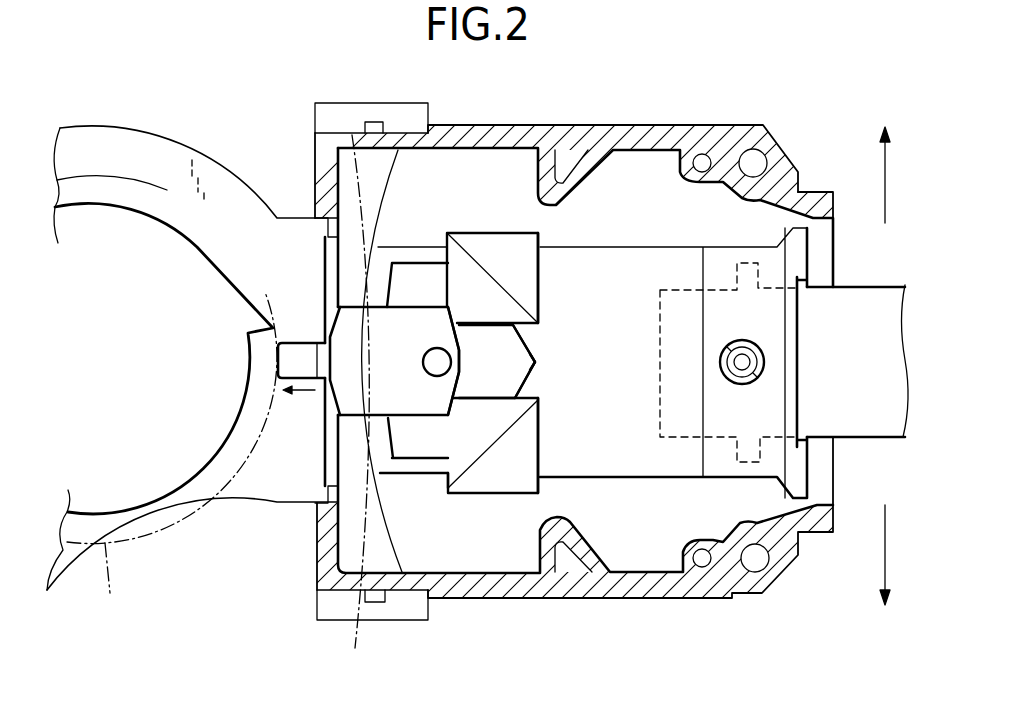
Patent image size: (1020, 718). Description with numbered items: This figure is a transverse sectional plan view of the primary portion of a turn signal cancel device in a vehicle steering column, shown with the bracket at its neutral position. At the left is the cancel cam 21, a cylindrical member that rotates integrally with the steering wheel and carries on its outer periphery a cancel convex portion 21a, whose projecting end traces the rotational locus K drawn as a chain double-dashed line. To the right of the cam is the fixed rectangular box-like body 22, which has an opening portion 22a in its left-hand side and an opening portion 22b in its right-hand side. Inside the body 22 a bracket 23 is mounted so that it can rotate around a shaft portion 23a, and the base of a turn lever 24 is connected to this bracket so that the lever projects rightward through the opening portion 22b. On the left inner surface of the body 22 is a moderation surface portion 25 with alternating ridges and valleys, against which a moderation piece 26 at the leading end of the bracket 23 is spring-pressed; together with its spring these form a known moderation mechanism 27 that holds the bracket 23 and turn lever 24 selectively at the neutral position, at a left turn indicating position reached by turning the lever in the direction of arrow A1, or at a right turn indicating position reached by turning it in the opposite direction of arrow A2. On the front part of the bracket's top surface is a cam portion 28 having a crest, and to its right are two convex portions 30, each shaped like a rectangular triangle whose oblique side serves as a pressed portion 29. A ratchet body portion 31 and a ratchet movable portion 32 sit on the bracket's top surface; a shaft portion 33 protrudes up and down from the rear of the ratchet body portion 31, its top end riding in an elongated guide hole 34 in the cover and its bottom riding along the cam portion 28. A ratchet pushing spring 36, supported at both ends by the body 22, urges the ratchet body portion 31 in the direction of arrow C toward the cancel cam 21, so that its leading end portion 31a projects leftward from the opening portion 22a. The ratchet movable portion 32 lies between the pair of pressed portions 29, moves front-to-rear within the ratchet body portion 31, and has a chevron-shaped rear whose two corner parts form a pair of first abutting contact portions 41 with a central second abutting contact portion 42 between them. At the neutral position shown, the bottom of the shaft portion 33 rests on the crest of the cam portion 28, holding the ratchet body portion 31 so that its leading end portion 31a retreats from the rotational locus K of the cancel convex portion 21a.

The cancel cam 21 is at (204, 262).
The cancel convex portion 21a is at (168, 190).
The rotational locus K is at (110, 594).
The body 22 is at (641, 124).
The opening portion 22a is at (320, 240).
The opening portion 22b is at (843, 216).
The bracket 23 is at (648, 246).
The shaft portion 23a is at (764, 357).
The turn lever 24 is at (870, 423).
The moderation surface portion 25 is at (318, 285).
The moderation piece 26 is at (330, 415).
The moderation mechanism 27 is at (322, 472).
The cam portion 28 is at (400, 264).
The pressed portion 29 is at (463, 256).
The convex portion 30 is at (540, 275).
The ratchet body portion 31 is at (423, 470).
The leading end portion 31a is at (280, 354).
The ratchet movable portion 32 is at (520, 390).
The shaft portion 33 is at (456, 366).
The guide hole 34 is at (447, 320).
The ratchet pushing spring 36 is at (356, 405).
The first abutting contact portion 41 is at (533, 328).
The second abutting contact portion 42 is at (537, 363).
The arrow A1 is at (887, 170).
The arrow A2 is at (887, 558).
The arrow C is at (296, 396).